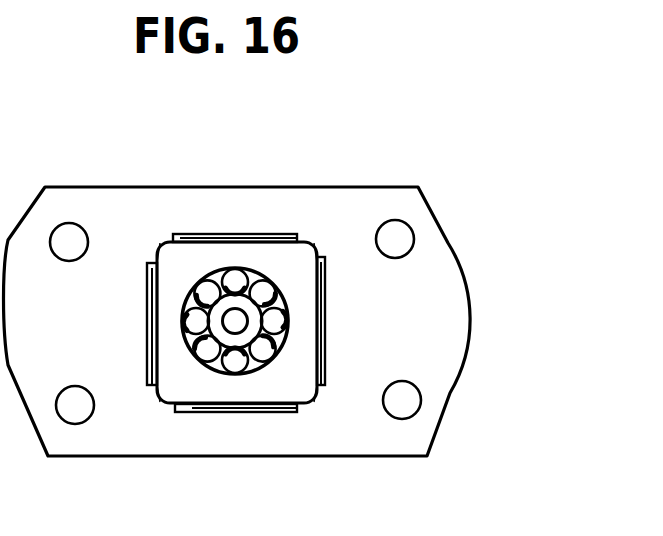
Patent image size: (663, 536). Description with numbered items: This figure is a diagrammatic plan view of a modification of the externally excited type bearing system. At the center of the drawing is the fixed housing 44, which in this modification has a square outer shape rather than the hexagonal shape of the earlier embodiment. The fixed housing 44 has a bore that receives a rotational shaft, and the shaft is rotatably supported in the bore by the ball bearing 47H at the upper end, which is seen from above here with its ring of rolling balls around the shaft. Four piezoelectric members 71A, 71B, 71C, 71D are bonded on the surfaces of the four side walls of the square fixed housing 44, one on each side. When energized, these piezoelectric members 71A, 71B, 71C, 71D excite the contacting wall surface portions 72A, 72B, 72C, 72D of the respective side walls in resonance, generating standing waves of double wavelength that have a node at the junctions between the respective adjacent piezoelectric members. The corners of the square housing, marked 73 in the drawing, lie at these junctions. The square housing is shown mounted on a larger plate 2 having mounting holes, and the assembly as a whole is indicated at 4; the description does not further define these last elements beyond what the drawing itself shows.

The base plate 2 is at (455, 355).
The bearing assembly 4 is at (494, 215).
The fixed housing 44 is at (182, 247).
The ball bearing 47H is at (205, 352).
The piezoelectric member 71A is at (262, 410).
The piezoelectric member 71B is at (325, 290).
The piezoelectric member 71C is at (262, 232).
The piezoelectric member 71D is at (148, 342).
The contacting wall surface portion 72A is at (227, 397).
The contacting wall surface portion 72B is at (313, 336).
The contacting wall surface portion 72C is at (220, 250).
The contacting wall surface portion 72D is at (163, 312).
The corner tab 73 is at (168, 264).